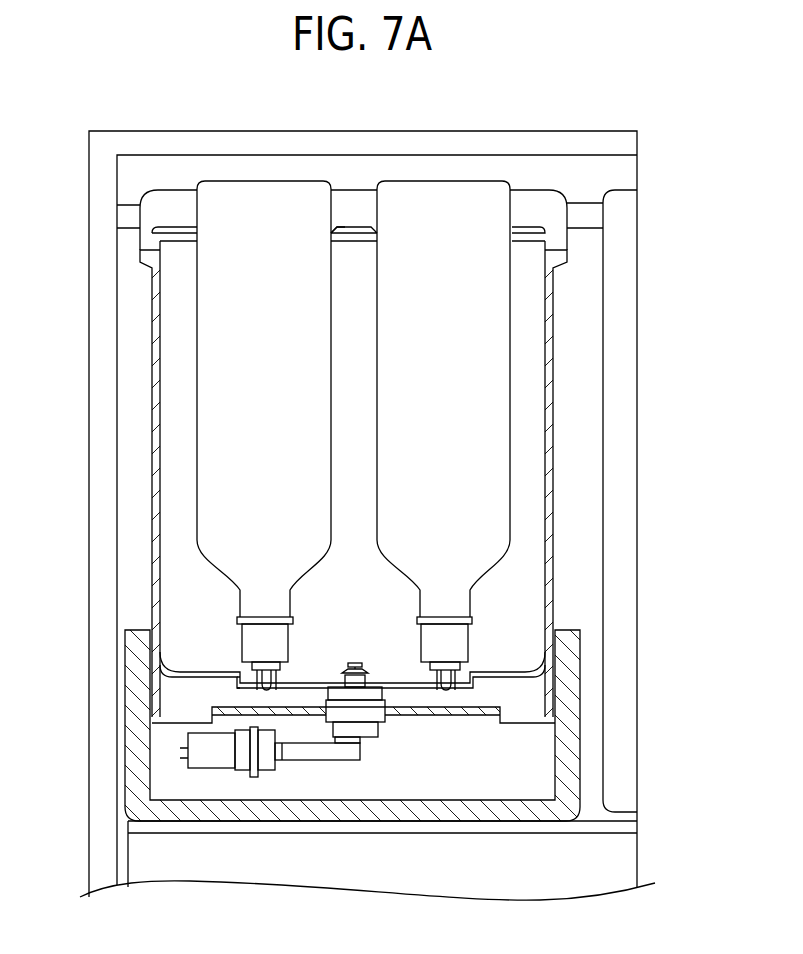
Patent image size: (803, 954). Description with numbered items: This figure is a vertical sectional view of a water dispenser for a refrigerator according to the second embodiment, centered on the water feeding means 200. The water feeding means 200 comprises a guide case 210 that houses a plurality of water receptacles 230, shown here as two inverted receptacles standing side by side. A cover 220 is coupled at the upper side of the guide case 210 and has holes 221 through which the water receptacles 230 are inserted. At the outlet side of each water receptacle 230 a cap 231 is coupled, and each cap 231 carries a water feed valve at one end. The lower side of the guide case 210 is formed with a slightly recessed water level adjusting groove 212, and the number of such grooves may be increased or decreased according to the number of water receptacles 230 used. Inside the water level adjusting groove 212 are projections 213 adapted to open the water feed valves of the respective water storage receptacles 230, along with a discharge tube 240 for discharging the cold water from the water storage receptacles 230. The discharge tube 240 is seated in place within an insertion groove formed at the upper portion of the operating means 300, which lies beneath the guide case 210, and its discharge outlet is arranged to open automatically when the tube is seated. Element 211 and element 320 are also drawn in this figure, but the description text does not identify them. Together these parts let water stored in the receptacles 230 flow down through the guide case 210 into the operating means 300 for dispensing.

The water feeding means 200 is at (582, 442).
The guide case 210 is at (553, 332).
The tank bottom 211 is at (507, 667).
The water level adjusting groove 212 is at (245, 680).
The projection 213 is at (268, 690).
The cover 220 is at (355, 226).
The hole 221 is at (333, 226).
The water receptacle 230 is at (490, 180).
The cap 231 is at (250, 642).
The discharge tube 240 is at (362, 710).
The operating means 300 is at (584, 739).
The pump 320 is at (215, 758).